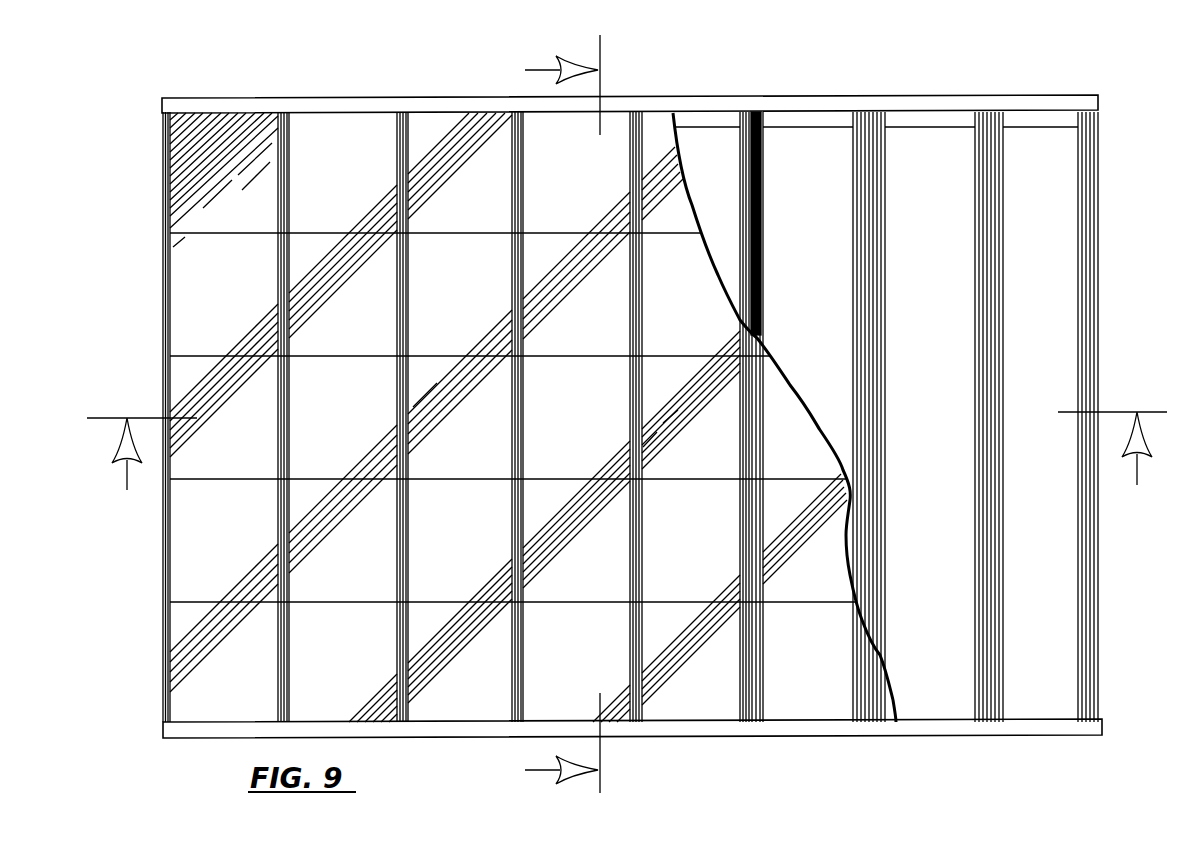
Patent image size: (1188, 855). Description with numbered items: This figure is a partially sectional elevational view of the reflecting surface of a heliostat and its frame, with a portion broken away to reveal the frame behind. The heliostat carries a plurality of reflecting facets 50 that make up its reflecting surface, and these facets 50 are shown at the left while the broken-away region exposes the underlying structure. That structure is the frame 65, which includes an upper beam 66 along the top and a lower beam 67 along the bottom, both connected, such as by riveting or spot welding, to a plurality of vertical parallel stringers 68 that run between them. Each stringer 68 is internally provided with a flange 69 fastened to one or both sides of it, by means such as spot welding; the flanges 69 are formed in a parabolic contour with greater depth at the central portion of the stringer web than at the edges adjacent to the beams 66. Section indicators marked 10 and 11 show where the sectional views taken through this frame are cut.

The reflecting facets 50 is at (350, 143).
The frame 65 is at (1041, 96).
The upper beam 66 is at (814, 110).
The lower beam 67 is at (1053, 726).
The stringers 68 is at (405, 133).
The flange 69 is at (743, 237).
The section line 10- 10 is at (627, 437).
The section line 11- 11 is at (578, 414).